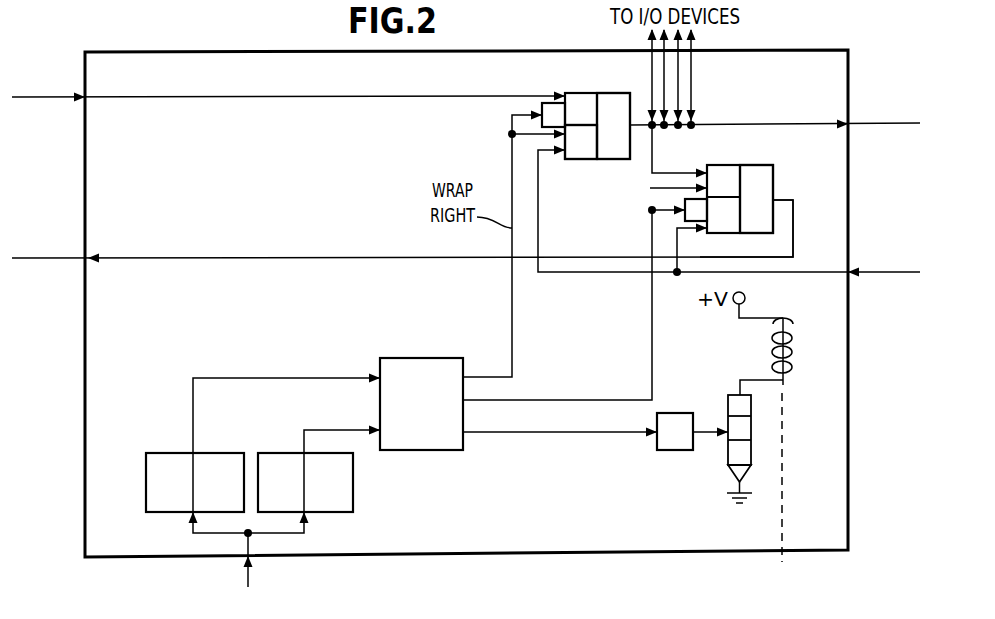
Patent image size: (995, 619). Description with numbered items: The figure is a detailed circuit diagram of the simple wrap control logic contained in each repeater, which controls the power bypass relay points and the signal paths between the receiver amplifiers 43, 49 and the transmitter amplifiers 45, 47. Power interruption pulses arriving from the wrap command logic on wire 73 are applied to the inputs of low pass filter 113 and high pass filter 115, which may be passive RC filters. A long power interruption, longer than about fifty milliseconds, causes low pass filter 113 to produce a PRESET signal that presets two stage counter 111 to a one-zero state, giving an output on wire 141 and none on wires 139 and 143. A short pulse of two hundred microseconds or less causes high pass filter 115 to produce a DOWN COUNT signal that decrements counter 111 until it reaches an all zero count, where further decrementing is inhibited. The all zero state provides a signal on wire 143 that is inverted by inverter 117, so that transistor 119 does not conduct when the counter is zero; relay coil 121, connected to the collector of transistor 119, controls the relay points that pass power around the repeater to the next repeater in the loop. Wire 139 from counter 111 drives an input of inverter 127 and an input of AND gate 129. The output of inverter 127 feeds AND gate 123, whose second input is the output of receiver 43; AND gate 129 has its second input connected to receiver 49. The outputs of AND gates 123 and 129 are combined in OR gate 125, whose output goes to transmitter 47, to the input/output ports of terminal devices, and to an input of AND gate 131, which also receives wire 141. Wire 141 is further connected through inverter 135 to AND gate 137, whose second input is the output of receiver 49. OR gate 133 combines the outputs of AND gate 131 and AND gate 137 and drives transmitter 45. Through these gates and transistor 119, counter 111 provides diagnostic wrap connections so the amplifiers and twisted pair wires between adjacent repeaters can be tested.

The receiver amplifier 43 is at (288, 97).
The transmitter amplifier 45 is at (402, 231).
The transmitter amplifier 47 is at (775, 113).
The receiver amplifier 49 is at (729, 221).
The wire 73 is at (250, 579).
The two stage counter 111 is at (410, 358).
The low pass filter 113 is at (353, 478).
The high pass filter 115 is at (146, 475).
The inverter 117 is at (677, 451).
The transistor 119 is at (728, 405).
The relay coil 121 is at (790, 360).
The AND gate 123 is at (586, 92).
The OR gate 125 is at (610, 93).
The inverter 127 is at (542, 104).
The AND gate 129 is at (581, 160).
The AND gate 131 is at (718, 165).
The OR gate 133 is at (773, 170).
The inverter 135 is at (683, 203).
The AND gate 137 is at (730, 233).
The wire 139 is at (512, 320).
The wire 141 is at (561, 398).
The wire 143 is at (553, 433).